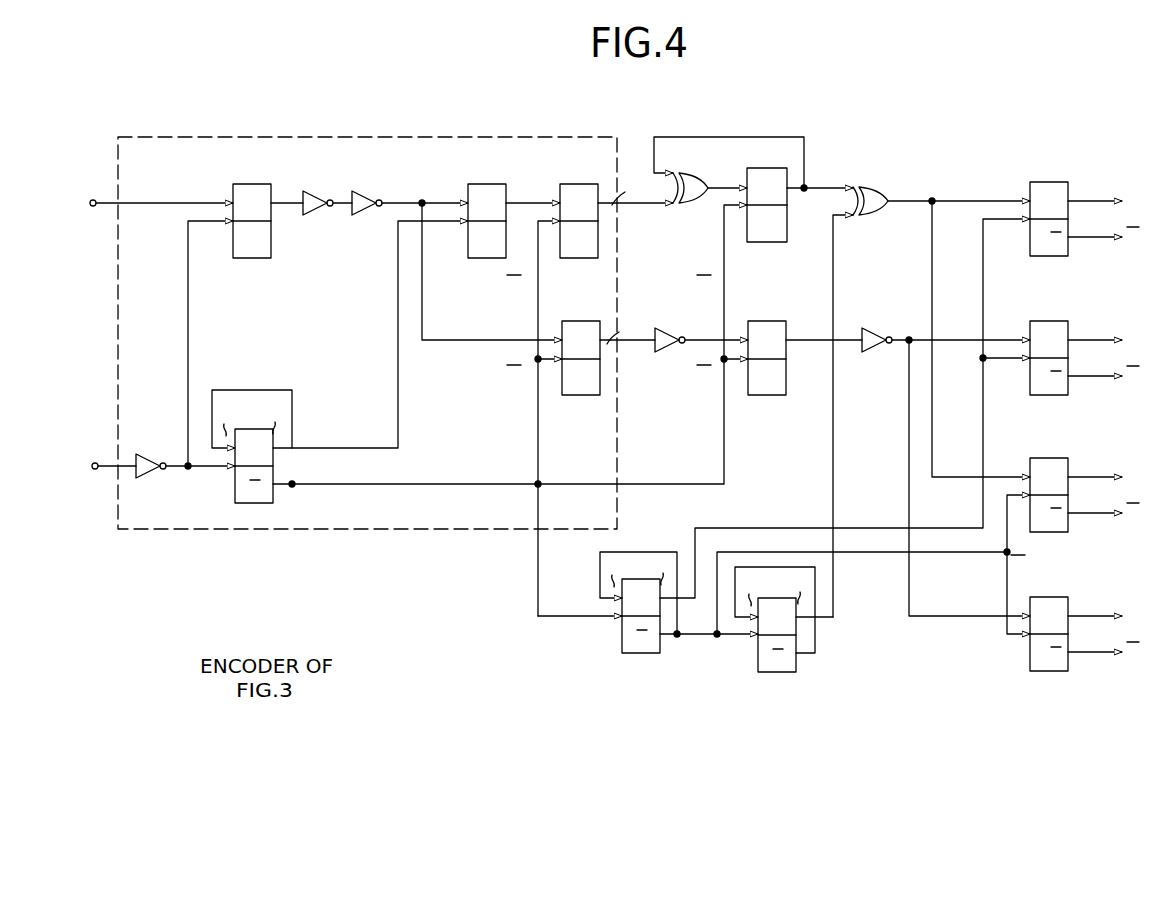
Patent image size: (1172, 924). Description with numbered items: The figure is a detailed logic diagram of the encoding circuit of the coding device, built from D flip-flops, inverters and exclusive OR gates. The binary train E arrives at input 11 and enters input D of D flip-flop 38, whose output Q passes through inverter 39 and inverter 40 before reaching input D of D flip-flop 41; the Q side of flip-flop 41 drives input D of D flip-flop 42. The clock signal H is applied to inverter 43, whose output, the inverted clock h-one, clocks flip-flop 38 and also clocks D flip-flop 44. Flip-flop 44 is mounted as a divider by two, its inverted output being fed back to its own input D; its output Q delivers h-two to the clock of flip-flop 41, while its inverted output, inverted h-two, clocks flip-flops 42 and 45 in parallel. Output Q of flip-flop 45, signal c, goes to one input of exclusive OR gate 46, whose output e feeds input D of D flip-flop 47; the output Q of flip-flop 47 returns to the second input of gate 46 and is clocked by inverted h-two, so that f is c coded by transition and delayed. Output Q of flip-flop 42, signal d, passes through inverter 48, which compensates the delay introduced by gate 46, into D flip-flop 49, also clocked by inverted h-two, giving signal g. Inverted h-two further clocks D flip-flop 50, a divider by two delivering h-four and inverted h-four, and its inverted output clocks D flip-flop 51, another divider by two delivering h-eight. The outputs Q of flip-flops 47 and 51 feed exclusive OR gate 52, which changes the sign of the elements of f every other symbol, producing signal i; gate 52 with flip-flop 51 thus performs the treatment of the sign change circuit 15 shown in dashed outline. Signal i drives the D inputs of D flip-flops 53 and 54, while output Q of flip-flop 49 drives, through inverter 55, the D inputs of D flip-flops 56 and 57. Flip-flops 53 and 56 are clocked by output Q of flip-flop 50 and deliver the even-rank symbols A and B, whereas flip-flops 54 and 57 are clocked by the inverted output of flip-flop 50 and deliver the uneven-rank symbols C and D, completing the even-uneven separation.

The sign change circuit 15 is at (168, 137).
The input 11 is at (96, 200).
The D flip-flop 38 is at (254, 184).
The inverter 39 is at (317, 191).
The inverter 40 is at (370, 191).
The D flip-flop 41 is at (488, 184).
The D flip-flop 45 is at (579, 184).
The exclusive OR gate 46 is at (691, 208).
The D flip-flop 47 is at (787, 240).
The exclusive OR gate 52 is at (878, 218).
The D flip-flop 53 is at (1051, 182).
The D flip-flop 56 is at (1051, 321).
The D flip-flop 54 is at (1068, 462).
The D flip-flop 57 is at (1068, 600).
The D flip-flop 42 is at (582, 395).
The inverter 48 is at (667, 352).
The D flip-flop 49 is at (772, 395).
The inverter 55 is at (873, 352).
The inverter 43 is at (150, 455).
The D flip-flop 44 is at (273, 503).
The D flip-flop 50 is at (622, 654).
The D flip-flop 51 is at (758, 673).